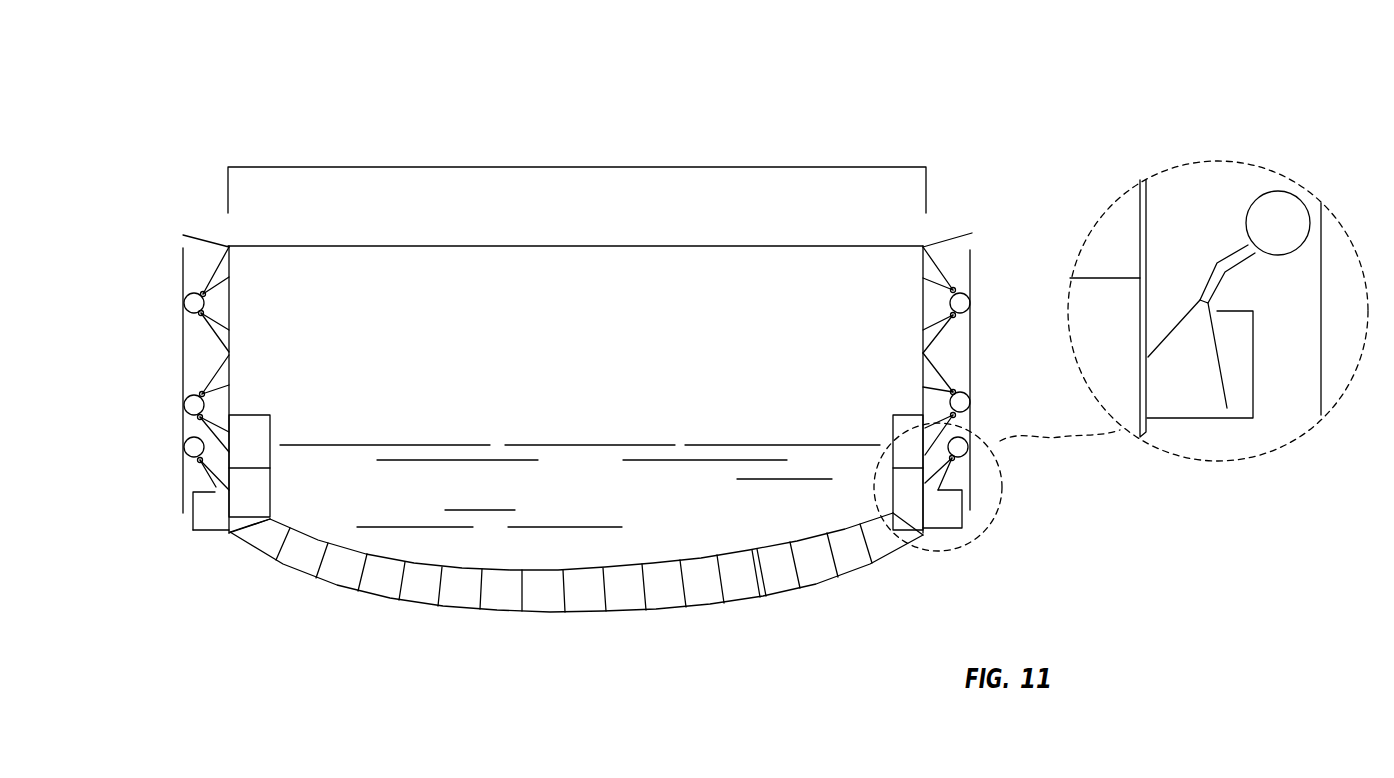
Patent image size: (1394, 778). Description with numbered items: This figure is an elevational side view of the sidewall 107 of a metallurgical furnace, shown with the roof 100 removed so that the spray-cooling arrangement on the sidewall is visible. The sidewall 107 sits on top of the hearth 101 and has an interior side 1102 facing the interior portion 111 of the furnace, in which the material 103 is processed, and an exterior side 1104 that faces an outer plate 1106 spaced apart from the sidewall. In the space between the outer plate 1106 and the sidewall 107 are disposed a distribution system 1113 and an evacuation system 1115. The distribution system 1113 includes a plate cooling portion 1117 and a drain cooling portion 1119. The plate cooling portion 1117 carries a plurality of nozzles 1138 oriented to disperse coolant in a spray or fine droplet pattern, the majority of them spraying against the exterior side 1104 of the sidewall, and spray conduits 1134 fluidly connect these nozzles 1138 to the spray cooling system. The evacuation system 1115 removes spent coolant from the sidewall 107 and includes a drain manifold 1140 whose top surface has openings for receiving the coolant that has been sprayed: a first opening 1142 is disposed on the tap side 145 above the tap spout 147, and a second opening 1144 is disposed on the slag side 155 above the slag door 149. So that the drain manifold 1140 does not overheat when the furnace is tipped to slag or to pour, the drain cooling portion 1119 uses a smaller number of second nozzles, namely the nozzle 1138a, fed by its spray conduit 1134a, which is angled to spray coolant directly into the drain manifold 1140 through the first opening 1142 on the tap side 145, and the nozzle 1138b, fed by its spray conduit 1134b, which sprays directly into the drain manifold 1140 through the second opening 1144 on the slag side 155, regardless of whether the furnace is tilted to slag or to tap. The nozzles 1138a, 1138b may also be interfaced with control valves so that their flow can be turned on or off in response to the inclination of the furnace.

The roof 100 is at (830, 64).
The tap side 145 is at (182, 146).
The slag side 155 is at (974, 178).
The tap spout 147 is at (236, 231).
The slag door 149 is at (912, 228).
The interior side 1102 is at (230, 297).
The distribution system 1113 is at (203, 244).
The exterior side 1104 is at (205, 264).
The sidewall 107 is at (243, 318).
The spray conduits 1134 is at (186, 302).
The outer plate 1106 is at (183, 347).
The plate cooling portion 1117 is at (207, 353).
The nozzles 1138 is at (229, 385).
The spray conduit 1134a is at (187, 444).
The second nozzle 1138a is at (200, 465).
The drain cooling portion 1119 is at (200, 488).
The first opening 1142 is at (228, 490).
The drain manifold 1140 is at (215, 532).
The evacuation system 1115 is at (187, 544).
The hearth 101 is at (263, 556).
The interior portion 111 is at (738, 534).
The material 103 is at (588, 510).
The spray conduit 1134b is at (967, 450).
The second nozzle 1138b is at (967, 465).
The second opening 1144 is at (932, 502).